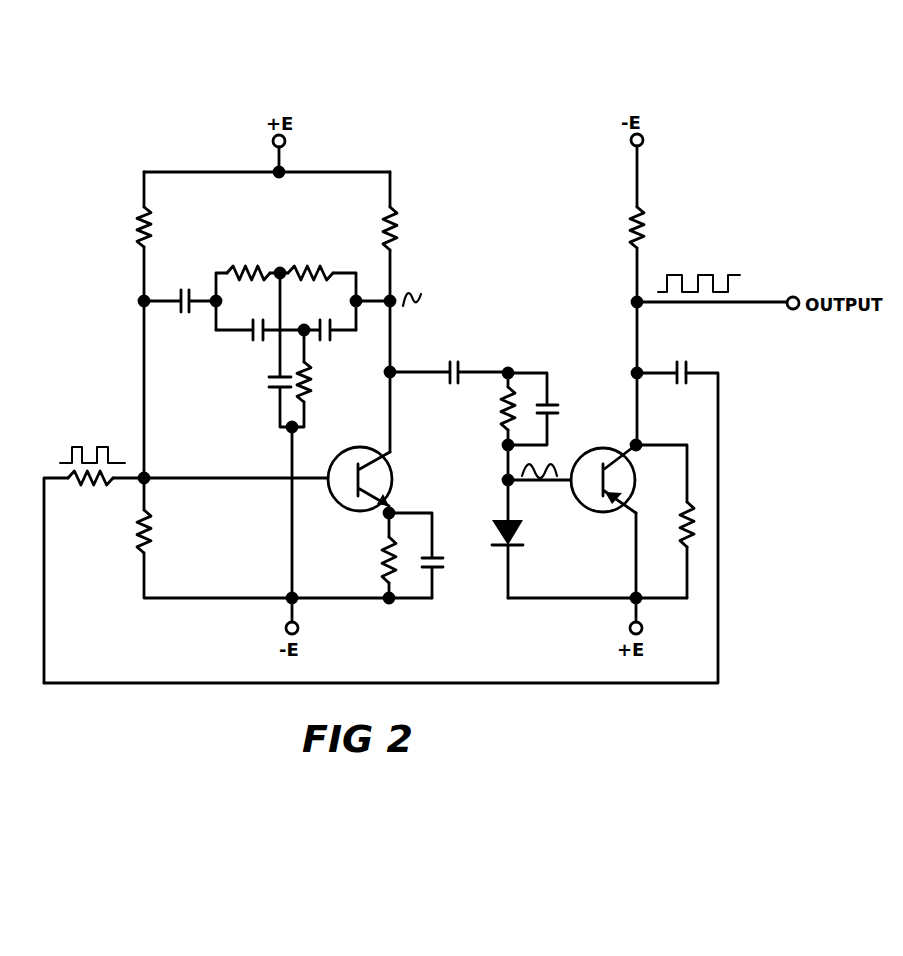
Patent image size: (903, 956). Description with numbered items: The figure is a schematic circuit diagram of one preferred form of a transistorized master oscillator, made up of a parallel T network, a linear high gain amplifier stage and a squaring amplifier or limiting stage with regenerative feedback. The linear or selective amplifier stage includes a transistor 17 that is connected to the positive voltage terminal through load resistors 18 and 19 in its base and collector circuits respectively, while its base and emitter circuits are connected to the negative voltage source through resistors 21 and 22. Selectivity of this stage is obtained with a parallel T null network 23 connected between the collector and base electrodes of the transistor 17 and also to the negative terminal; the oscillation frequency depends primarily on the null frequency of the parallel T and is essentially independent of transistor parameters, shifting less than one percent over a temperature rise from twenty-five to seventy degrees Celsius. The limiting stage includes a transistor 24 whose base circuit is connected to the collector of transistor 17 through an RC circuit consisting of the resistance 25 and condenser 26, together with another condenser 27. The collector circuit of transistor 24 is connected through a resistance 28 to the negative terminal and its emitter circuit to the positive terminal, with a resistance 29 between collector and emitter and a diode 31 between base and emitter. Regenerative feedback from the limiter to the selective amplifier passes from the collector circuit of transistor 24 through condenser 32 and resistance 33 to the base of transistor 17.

The transistor 17 is at (367, 449).
The load resistor 18 is at (152, 224).
The load resistor 19 is at (385, 229).
The resistor 21 is at (151, 531).
The resistor 22 is at (384, 547).
The parallel T null network 23 is at (264, 270).
The transistor 24 is at (602, 449).
The resistance 25 is at (506, 413).
The condenser 26 is at (551, 402).
The condenser 27 is at (460, 367).
The resistance 28 is at (643, 218).
The resistance 29 is at (681, 515).
The diode 31 is at (520, 533).
The condenser 32 is at (684, 367).
The resistance 33 is at (186, 565).